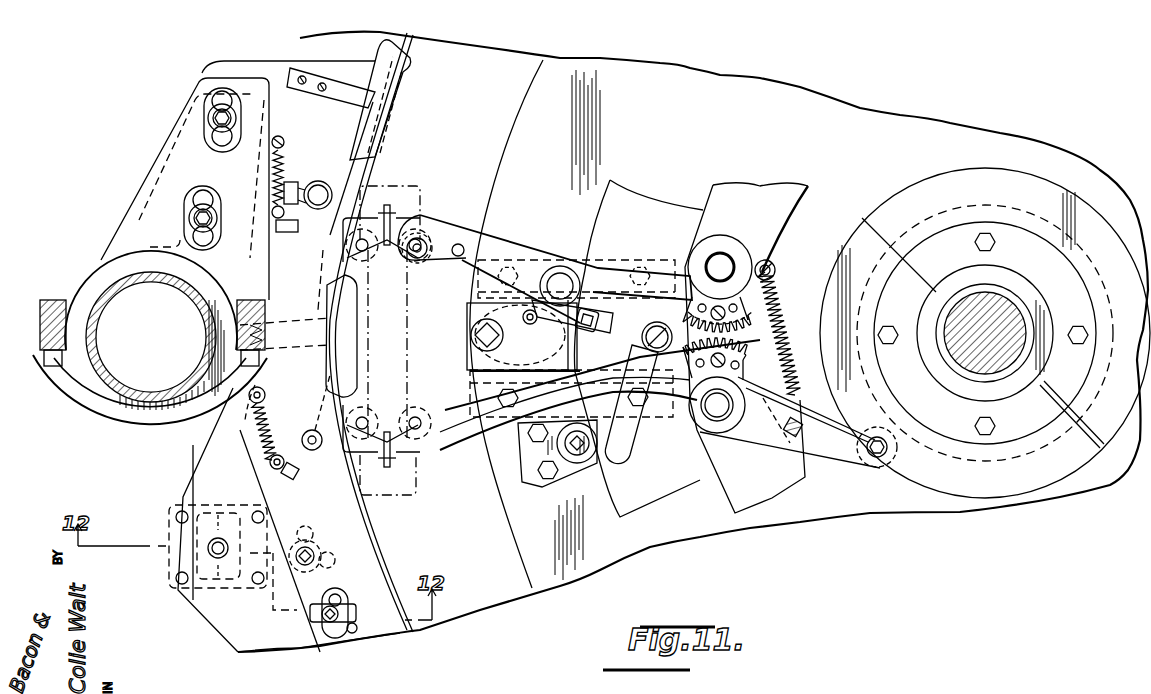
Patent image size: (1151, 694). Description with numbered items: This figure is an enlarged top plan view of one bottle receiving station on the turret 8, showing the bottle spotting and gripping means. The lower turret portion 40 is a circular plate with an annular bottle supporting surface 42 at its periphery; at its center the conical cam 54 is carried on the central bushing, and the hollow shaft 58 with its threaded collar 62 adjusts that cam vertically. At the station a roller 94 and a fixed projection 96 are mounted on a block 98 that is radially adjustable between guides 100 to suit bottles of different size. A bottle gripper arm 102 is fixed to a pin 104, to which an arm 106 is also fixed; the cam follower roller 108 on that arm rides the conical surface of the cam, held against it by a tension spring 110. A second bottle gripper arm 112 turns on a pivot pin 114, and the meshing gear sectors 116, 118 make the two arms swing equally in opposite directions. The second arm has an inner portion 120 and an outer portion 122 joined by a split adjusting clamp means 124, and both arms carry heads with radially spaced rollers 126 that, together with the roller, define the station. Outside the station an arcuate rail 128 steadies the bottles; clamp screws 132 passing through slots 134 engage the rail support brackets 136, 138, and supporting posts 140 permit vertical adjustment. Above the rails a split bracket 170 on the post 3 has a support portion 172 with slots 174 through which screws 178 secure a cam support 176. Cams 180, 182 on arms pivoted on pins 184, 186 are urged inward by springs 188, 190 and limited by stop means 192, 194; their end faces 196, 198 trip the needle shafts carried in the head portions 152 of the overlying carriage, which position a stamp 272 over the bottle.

The tubular post 3 is at (125, 282).
The turret structure 8 is at (508, 580).
The lower turret portion 40 is at (784, 96).
The annular bottle supporting surface 42 is at (515, 103).
The conical cam 54 is at (913, 195).
The hollow shaft 58 is at (1018, 308).
The threaded collar 62 is at (988, 290).
The roller 94 is at (467, 340).
The fixed projection 96 is at (462, 325).
The block 98 is at (483, 372).
The guides 100 is at (477, 282).
The bottle gripper arm 102 is at (497, 423).
The pin 104 is at (708, 410).
The arm 106 is at (745, 437).
The cam follower roller 108 is at (890, 455).
The tension spring 110 is at (772, 305).
The second bottle gripper arm 112 is at (539, 243).
The pivot pin 114 is at (718, 263).
The gear sector 116 is at (790, 350).
The gear sector 118 is at (772, 282).
The inner portion 120 is at (662, 272).
The outer portion 122 is at (488, 246).
The split adjusting clamp means 124 is at (642, 322).
The rollers 126 is at (405, 260).
The rail 128 is at (352, 523).
The clamp screws 132 is at (330, 613).
The slots 134 is at (320, 594).
The rail support bracket 136 is at (214, 615).
The rail support bracket 138 is at (212, 432).
The supporting posts 140 is at (213, 547).
The head portions 152 is at (393, 183).
The split bracket 170 is at (65, 380).
The support portion 172 is at (160, 143).
The slots 174 is at (198, 203).
The cam support 176 is at (271, 66).
The screws 178 is at (213, 104).
The cam 180 is at (390, 122).
The cam 182 is at (378, 352).
The pin 184 is at (318, 193).
The pin 186 is at (310, 432).
The spring 188 is at (287, 135).
The spring 190 is at (232, 458).
The stop means 192 is at (296, 226).
The stop means 194 is at (294, 470).
The end face 196 is at (372, 172).
The end face 198 is at (318, 356).
The stamp 272 is at (447, 276).